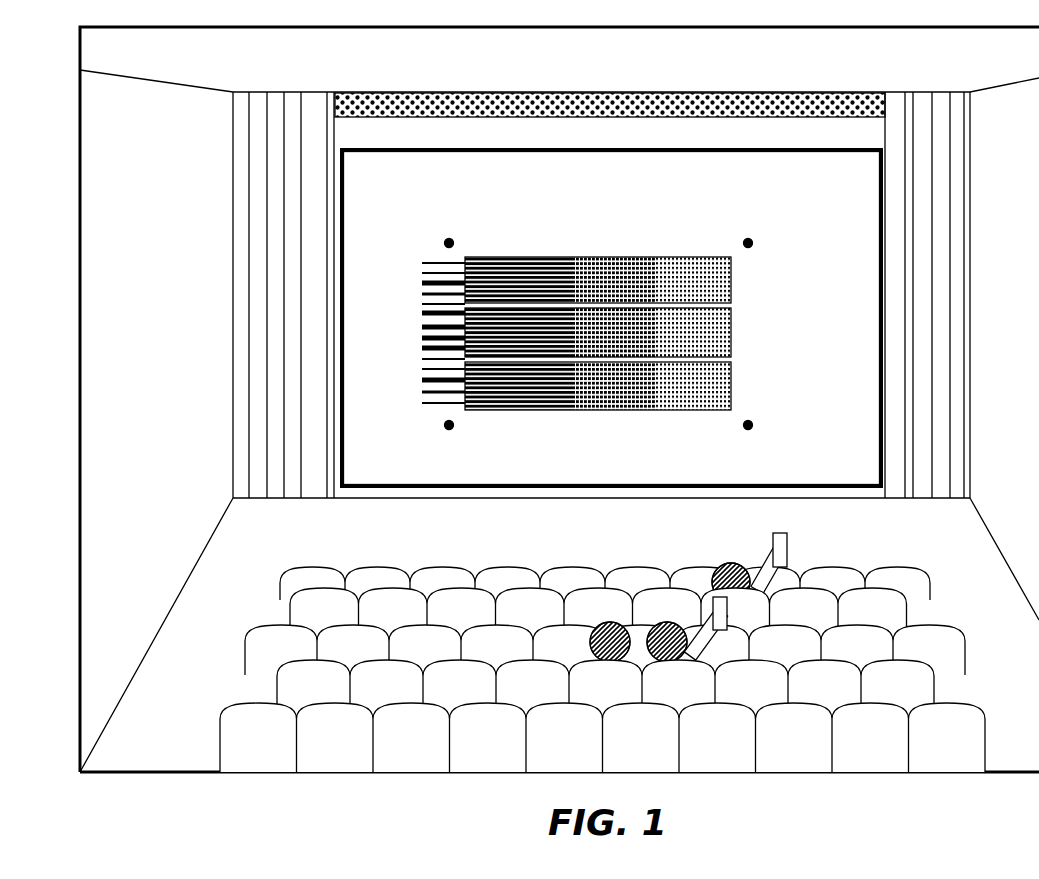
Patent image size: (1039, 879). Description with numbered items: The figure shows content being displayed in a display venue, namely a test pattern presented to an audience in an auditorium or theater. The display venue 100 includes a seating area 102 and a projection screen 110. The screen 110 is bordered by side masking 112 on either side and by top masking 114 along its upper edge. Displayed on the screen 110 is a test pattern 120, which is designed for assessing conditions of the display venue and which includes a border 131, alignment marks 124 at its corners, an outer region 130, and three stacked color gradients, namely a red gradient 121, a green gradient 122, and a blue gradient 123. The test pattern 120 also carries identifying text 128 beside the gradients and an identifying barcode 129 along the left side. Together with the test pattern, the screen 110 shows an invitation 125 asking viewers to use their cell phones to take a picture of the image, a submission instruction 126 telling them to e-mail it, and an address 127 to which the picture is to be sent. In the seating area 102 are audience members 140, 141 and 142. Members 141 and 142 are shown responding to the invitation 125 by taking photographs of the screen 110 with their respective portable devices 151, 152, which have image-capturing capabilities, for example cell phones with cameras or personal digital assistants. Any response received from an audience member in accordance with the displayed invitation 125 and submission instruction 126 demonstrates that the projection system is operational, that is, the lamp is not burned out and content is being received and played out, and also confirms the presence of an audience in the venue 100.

The display venue 100 is at (185, 775).
The seating area 102 is at (602, 646).
The projection screen 110 is at (492, 500).
The side masking 112 is at (908, 500).
The top masking 114 is at (434, 92).
The test pattern 120 is at (660, 325).
The red gradient 121 is at (733, 266).
The green gradient 122 is at (733, 310).
The blue gradient 123 is at (733, 372).
The alignment marks 124 is at (447, 241).
The invitation 125 is at (483, 195).
The submission instruction 126 is at (483, 455).
The address 127 is at (610, 455).
The identifying text 128 is at (845, 336).
The identifying barcode 129 is at (421, 327).
The outer region 130 is at (718, 140).
The border 131 is at (587, 152).
The audience member 140 is at (600, 626).
The audience member 141 is at (665, 624).
The audience member 142 is at (728, 566).
The portable device 151 is at (706, 597).
The portable device 152 is at (788, 538).